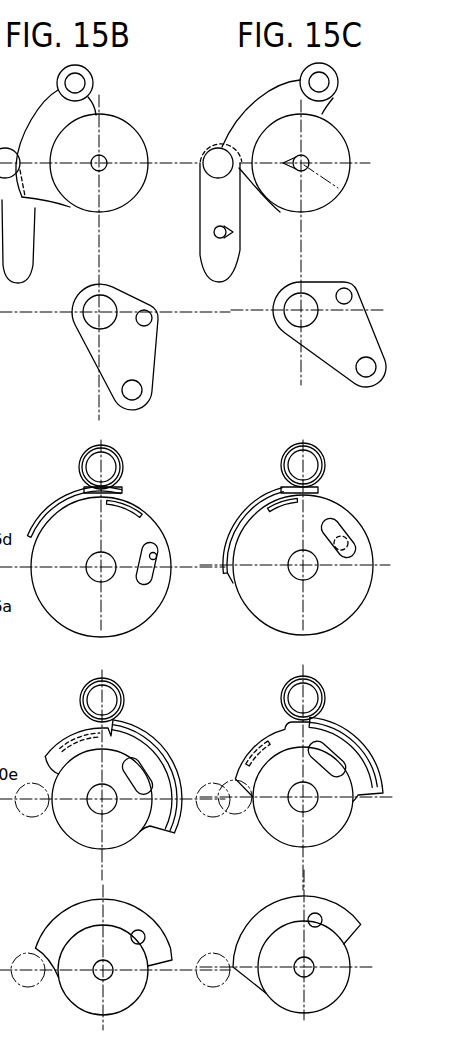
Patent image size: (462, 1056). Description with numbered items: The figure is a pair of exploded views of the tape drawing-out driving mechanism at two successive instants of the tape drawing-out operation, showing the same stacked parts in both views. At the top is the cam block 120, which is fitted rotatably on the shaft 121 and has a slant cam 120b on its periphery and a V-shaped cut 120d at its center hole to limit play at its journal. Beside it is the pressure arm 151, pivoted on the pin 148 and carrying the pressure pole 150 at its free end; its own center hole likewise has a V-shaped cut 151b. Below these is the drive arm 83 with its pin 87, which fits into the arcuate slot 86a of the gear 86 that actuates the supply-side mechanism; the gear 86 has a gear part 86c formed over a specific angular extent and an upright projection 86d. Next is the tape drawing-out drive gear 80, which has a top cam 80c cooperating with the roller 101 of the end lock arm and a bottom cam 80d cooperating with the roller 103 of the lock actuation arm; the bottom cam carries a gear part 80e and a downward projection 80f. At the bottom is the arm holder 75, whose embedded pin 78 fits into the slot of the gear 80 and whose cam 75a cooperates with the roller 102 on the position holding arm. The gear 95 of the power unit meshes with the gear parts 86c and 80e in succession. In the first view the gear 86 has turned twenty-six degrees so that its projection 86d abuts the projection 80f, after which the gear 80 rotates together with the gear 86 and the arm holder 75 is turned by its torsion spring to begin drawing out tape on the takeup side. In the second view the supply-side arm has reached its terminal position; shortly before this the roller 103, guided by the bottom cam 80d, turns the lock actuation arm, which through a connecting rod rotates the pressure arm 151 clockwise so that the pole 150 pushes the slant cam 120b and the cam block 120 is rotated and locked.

In FIG. 15B, the cam block 120 is at (125, 128).
In FIG. 15C, the cam block 120 is at (334, 135).
In FIG. 15B, the slant cam 120b is at (40, 201).
In FIG. 15C, the slant cam 120b is at (222, 147).
In FIG. 15C, the V-shaped cut 120d is at (242, 166).
In FIG. 15C, the shaft 121 is at (338, 188).
In FIG. 15C, the pressure pole 150 is at (205, 158).
In FIG. 15C, the pressure arm 151 is at (200, 200).
In FIG. 15C, the pin 148 is at (213, 232).
In FIG. 15C, the V-shaped cut 151b is at (230, 237).
In FIG. 15B, the drive arm 83 is at (80, 337).
In FIG. 15C, the drive arm 83 is at (283, 335).
In FIG. 15B, the pin 87 is at (152, 322).
In FIG. 15C, the pin 87 is at (349, 290).
In FIG. 15B, the gear 95 is at (80, 472).
In FIG. 15C, the gear 95 is at (285, 457).
In FIG. 15B, the gear 86 is at (52, 617).
In FIG. 15C, the gear 86 is at (352, 610).
In FIG. 15B, the gear part 86c is at (52, 502).
In FIG. 15C, the gear part 86c is at (247, 510).
In FIG. 15B, the upright projection 86d is at (138, 508).
In FIG. 15C, the upright projection 86d is at (279, 512).
In FIG. 15B, the arcuate slot 86a is at (153, 545).
In FIG. 15C, the arcuate slot 86a is at (341, 530).
In FIG. 15B, the tape drawing-out drive gear 80 is at (86, 848).
In FIG. 15C, the tape drawing-out drive gear 80 is at (342, 829).
In FIG. 15B, the bottom cam 80d is at (82, 730).
In FIG. 15C, the bottom cam 80d is at (250, 748).
In FIG. 15B, the projection 80f is at (75, 738).
In FIG. 15C, the projection 80f is at (255, 742).
In FIG. 15B, the top cam 80c is at (160, 745).
In FIG. 15C, the top cam 80c is at (366, 745).
In FIG. 15B, the gear part 80e is at (172, 757).
In FIG. 15C, the gear part 80e is at (374, 757).
In FIG. 15B, the pin 78 is at (147, 802).
In FIG. 15C, the pin 78 is at (318, 748).
In FIG. 15B, the roller 101 is at (15, 815).
In FIG. 15C, the roller 101 is at (250, 817).
In FIG. 15B, the roller 103 is at (197, 817).
In FIG. 15B, the arm holder 75 is at (133, 1002).
In FIG. 15C, the arm holder 75 is at (338, 1002).
In FIG. 15B, the cam 75a is at (36, 951).
In FIG. 15C, the cam 75a is at (249, 988).
In FIG. 15B, the roller 102 is at (40, 990).